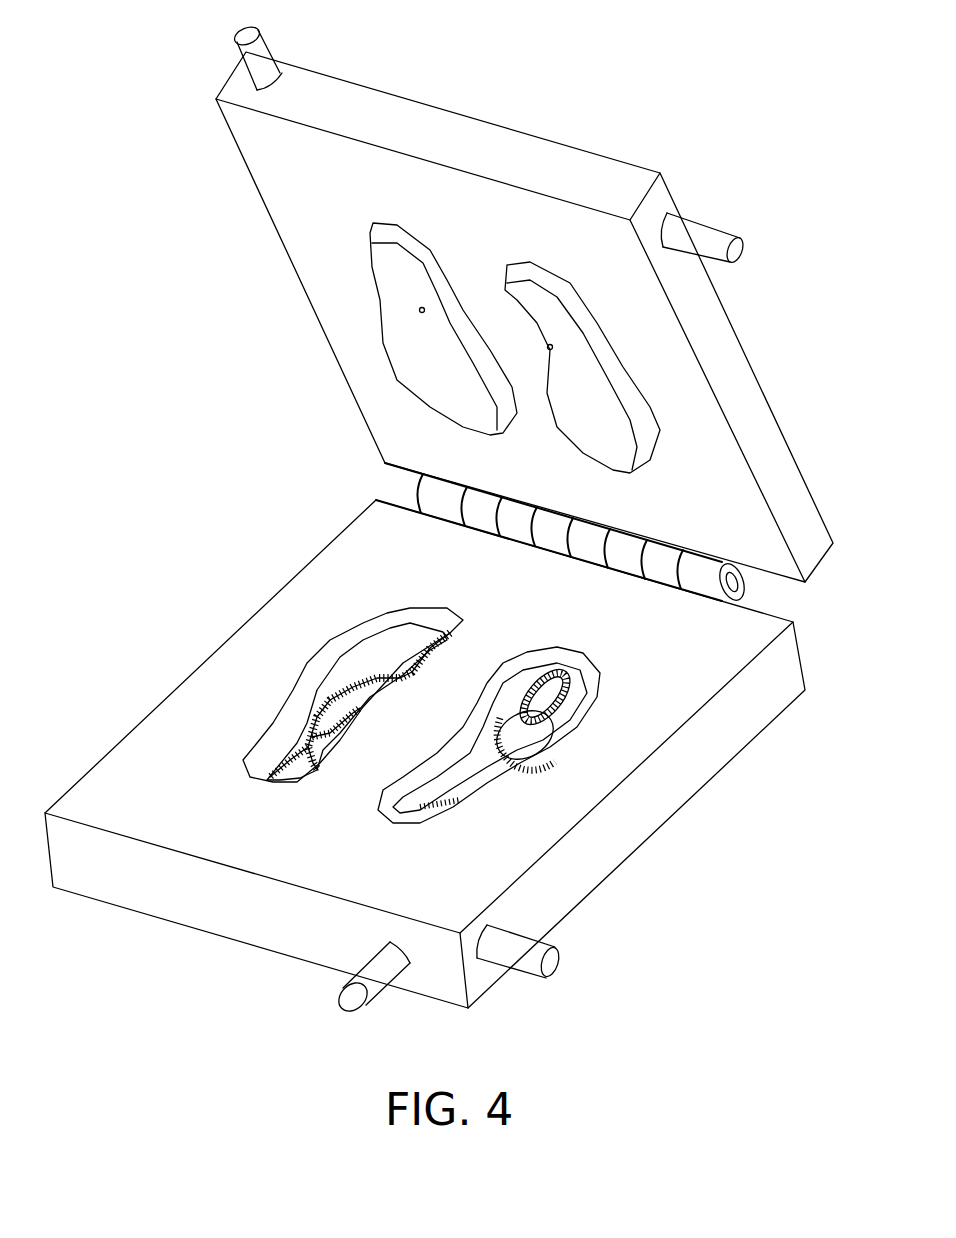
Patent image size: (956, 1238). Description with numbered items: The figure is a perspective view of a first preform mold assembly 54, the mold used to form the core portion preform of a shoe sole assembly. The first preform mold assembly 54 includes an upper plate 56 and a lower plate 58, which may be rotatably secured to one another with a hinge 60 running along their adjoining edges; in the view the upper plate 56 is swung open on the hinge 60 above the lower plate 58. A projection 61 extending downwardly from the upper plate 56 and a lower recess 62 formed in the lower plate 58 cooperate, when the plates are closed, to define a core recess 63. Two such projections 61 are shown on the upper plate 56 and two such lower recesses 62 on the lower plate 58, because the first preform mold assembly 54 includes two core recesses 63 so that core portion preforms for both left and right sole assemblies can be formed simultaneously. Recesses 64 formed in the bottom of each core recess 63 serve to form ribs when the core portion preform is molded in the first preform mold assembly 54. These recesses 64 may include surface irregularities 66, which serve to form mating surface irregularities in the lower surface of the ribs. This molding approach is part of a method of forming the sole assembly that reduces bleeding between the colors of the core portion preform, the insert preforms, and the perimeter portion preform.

The first preform mold assembly 54 is at (215, 489).
The upper plate 56 is at (708, 508).
The lower plate 58 is at (515, 843).
The hinge 60 is at (746, 590).
The projection 61 is at (395, 303).
The lower recess 62 is at (385, 622).
The core recess 63 is at (325, 668).
The recesses 64 is at (313, 733).
The surface irregularities 66 is at (513, 760).